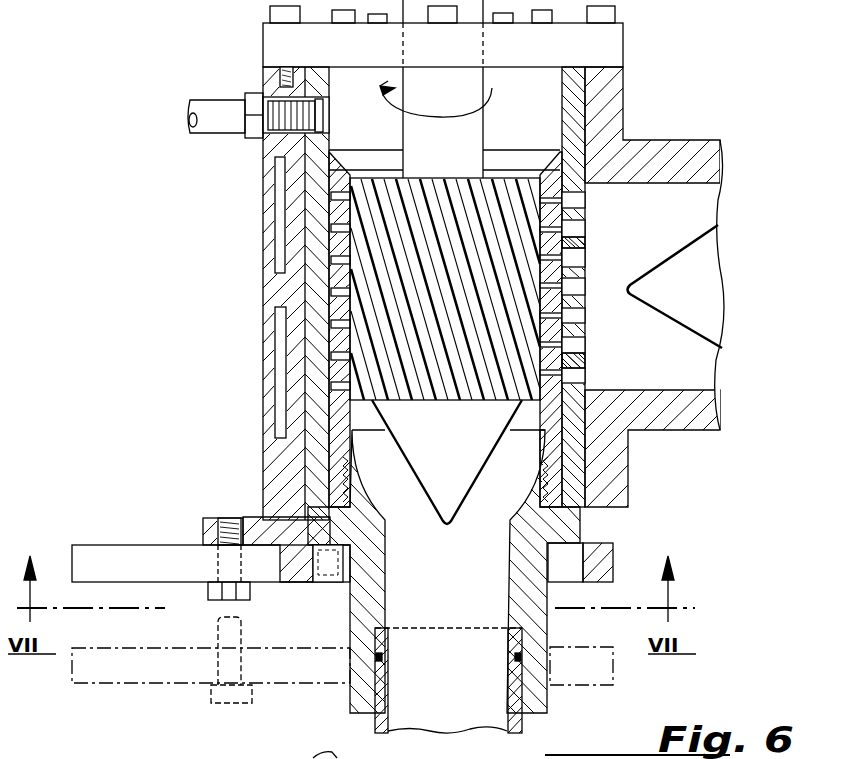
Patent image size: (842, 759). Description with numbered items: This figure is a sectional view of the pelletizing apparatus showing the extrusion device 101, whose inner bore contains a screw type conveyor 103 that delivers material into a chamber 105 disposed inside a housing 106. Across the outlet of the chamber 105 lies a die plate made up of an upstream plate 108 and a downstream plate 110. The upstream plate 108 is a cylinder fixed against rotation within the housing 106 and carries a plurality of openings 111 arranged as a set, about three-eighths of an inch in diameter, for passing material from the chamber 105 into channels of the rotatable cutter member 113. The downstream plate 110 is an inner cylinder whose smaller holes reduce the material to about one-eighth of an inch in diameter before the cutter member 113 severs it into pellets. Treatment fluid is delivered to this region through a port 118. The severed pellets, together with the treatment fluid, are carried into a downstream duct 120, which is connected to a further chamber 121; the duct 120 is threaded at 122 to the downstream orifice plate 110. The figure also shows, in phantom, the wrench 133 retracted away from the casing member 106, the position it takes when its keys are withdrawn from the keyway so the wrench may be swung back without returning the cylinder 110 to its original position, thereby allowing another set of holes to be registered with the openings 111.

The extrusion device 101 is at (632, 118).
The screw type conveyor 103 is at (705, 272).
The chamber 105 is at (639, 331).
The housing 106 is at (258, 348).
The upstream plate 108 is at (574, 292).
The downstream plate 110 is at (574, 387).
The openings 111 is at (580, 233).
The rotatable cutter member 113 is at (488, 187).
The port 118 is at (216, 107).
The downstream duct 120 is at (388, 583).
The chamber 121 is at (458, 688).
The threaded connection 122 is at (545, 478).
The wrench (phantom position) 133 is at (190, 686).